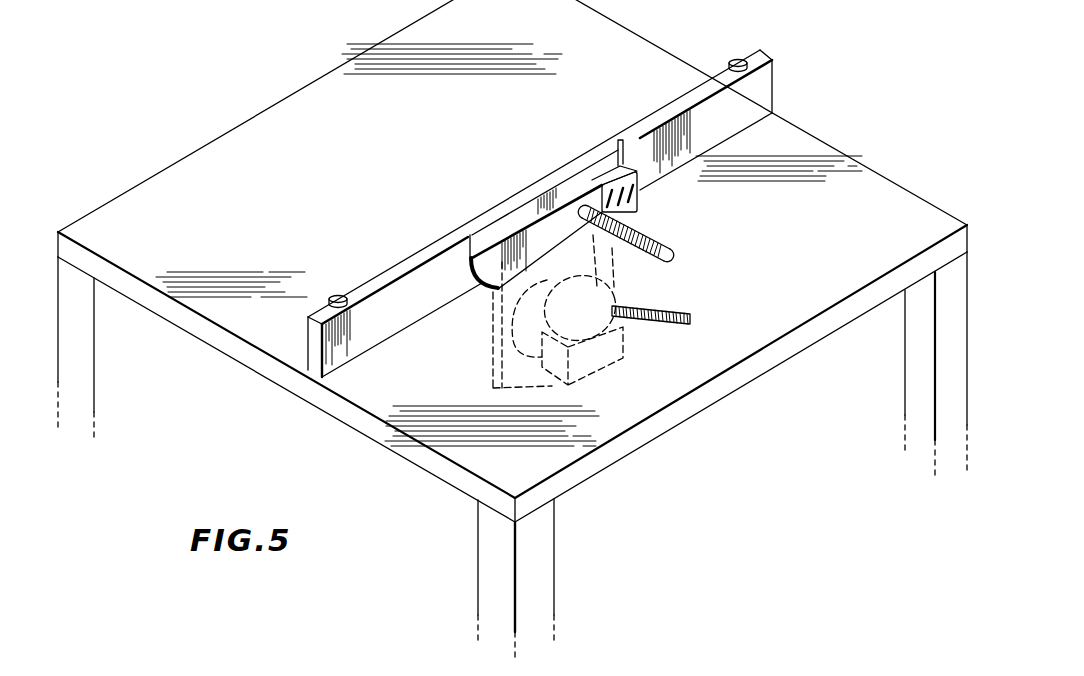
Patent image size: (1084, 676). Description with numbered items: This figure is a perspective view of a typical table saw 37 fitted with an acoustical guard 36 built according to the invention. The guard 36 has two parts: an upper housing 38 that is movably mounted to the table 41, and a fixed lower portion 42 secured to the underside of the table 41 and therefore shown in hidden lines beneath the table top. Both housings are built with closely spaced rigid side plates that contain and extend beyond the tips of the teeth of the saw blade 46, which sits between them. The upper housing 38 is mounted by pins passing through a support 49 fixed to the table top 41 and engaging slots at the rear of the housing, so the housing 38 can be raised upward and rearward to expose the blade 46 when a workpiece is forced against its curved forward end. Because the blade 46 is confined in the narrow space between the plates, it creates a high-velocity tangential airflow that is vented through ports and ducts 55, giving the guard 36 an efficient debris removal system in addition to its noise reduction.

The table saw 37 is at (781, 209).
The table 41 is at (256, 140).
The upper housing 38 is at (522, 236).
The acoustical guard 36 is at (491, 236).
The support 49 is at (608, 173).
The ducts 55 is at (672, 253).
The blade 46 is at (617, 277).
The lower portion 42 is at (491, 375).